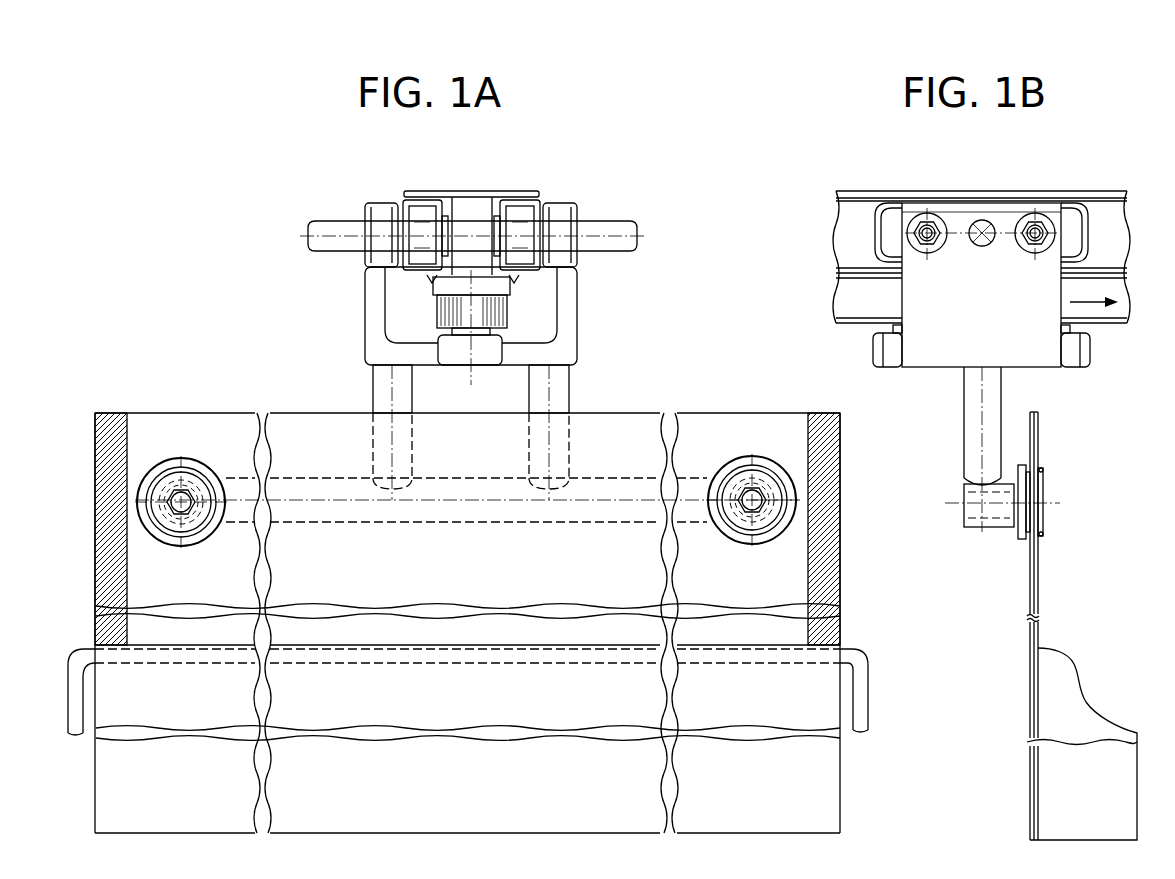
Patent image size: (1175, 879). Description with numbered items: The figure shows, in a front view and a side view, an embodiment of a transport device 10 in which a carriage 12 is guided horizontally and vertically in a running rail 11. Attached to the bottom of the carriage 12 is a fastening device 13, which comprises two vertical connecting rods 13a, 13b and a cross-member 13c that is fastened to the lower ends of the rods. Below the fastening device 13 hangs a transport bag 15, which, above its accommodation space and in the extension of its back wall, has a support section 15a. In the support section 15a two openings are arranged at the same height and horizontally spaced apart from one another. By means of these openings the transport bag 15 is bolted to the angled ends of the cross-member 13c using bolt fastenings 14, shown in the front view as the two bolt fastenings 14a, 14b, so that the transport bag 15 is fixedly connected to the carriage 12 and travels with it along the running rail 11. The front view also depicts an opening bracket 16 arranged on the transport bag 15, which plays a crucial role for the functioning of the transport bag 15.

In FIG. 1A, the transport device 10 is at (258, 288).
In FIG. 1B, the transport device 10 is at (786, 268).
In FIG. 1A, the running rail 11 is at (507, 192).
In FIG. 1B, the running rail 11 is at (850, 238).
In FIG. 1A, the carriage 12 is at (565, 335).
In FIG. 1B, the carriage 12 is at (1008, 330).
In FIG. 1B, the fastening device 13 is at (960, 545).
In FIG. 1A, the vertical connecting rod 13a is at (383, 388).
In FIG. 1A, the vertical connecting rod 13b is at (560, 388).
In FIG. 1A, the cross-member 13c is at (332, 488).
In FIG. 1B, the bolt fastening 14 is at (1076, 505).
In FIG. 1A, the bolt fastening 14a is at (173, 466).
In FIG. 1A, the bolt fastening 14b is at (736, 462).
In FIG. 1A, the transport bag 15 is at (852, 793).
In FIG. 1B, the transport bag 15 is at (1004, 741).
In FIG. 1A, the support section 15a is at (765, 570).
In FIG. 1B, the support section 15a is at (1040, 573).
In FIG. 1A, the opening bracket 16 is at (860, 685).